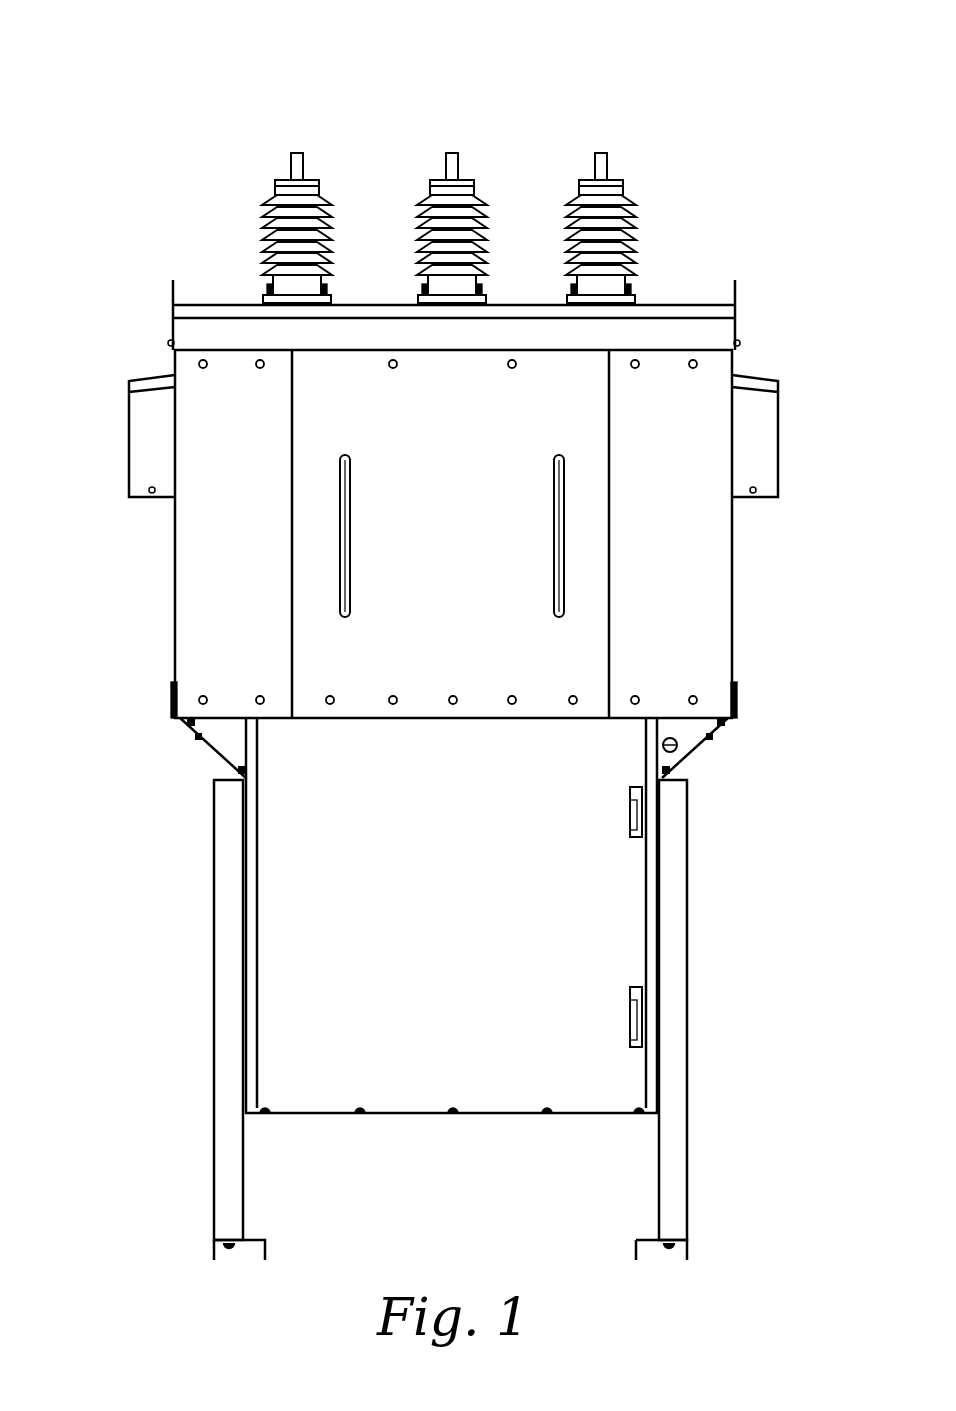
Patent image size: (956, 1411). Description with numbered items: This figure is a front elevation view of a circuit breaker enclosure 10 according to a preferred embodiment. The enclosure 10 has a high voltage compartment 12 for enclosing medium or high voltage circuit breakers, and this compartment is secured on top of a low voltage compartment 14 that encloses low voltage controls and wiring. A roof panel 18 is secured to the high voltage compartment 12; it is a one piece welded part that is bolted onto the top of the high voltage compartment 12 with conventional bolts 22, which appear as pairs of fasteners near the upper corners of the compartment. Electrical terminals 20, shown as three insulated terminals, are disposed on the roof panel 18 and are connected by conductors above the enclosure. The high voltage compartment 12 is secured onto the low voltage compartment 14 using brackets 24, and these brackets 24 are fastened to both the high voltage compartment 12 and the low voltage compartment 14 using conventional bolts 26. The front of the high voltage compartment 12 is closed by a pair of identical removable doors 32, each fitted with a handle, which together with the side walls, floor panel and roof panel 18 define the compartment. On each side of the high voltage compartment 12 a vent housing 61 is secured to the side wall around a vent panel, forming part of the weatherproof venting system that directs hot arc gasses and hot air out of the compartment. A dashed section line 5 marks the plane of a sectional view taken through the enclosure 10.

The section line 5- 5 is at (312, 783).
The enclosure 10 is at (441, 1212).
The high voltage compartment 12 is at (732, 595).
The low voltage compartment 14 is at (573, 890).
The roof panel 18 is at (683, 305).
The electrical terminals 20 is at (602, 152).
The bolts 22 is at (664, 392).
The brackets 24 is at (697, 745).
The bolts 26 is at (678, 768).
The removable doors 32 is at (592, 605).
The vent housing 61 is at (778, 425).